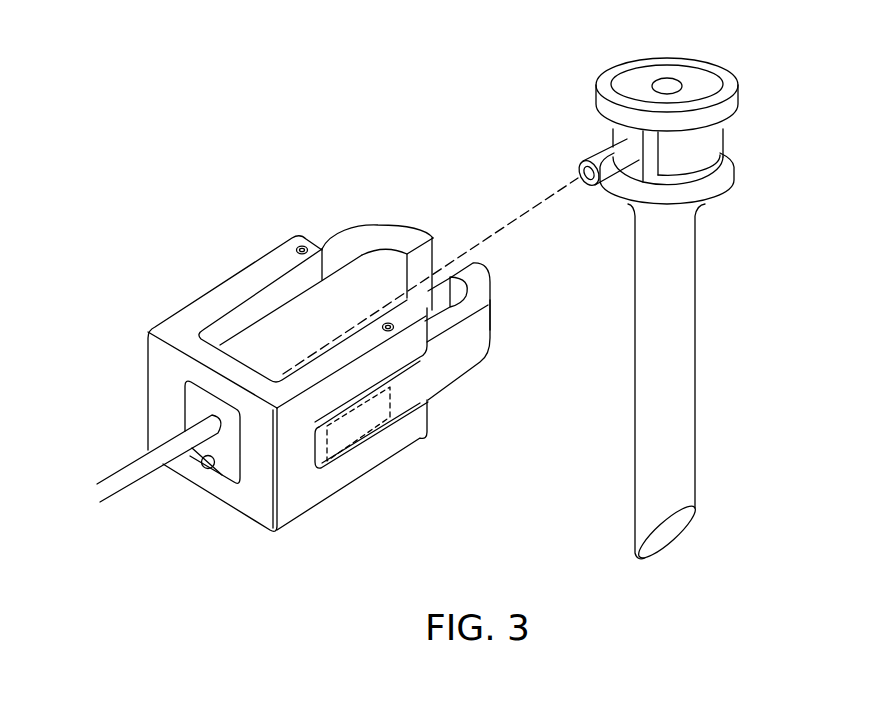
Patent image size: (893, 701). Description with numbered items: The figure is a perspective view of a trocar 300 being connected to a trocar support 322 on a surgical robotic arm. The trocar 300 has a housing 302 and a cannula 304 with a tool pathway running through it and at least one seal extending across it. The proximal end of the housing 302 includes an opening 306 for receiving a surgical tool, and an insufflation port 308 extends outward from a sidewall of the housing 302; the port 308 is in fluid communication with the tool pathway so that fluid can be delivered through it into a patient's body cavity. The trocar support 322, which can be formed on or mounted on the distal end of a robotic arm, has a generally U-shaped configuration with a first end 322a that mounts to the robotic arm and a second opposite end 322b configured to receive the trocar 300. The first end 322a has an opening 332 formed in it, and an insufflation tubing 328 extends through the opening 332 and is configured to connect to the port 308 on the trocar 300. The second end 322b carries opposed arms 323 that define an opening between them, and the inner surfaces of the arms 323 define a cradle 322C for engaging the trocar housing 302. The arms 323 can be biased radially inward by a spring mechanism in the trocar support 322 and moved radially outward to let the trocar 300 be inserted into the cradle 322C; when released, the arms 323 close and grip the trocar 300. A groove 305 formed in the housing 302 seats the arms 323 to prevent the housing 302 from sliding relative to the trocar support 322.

The trocar 300 is at (780, 131).
The housing 302 is at (734, 79).
The cannula 304 is at (697, 362).
The groove 305 is at (733, 147).
The opening 306 is at (661, 78).
The insufflation port 308 is at (585, 187).
The trocar support 322 is at (384, 514).
The first end 322a is at (112, 365).
The second end 322b is at (512, 380).
The cradle 322C is at (364, 270).
The arms 323 is at (414, 233).
The insufflation tubing 328 is at (160, 464).
The opening 332 is at (214, 468).